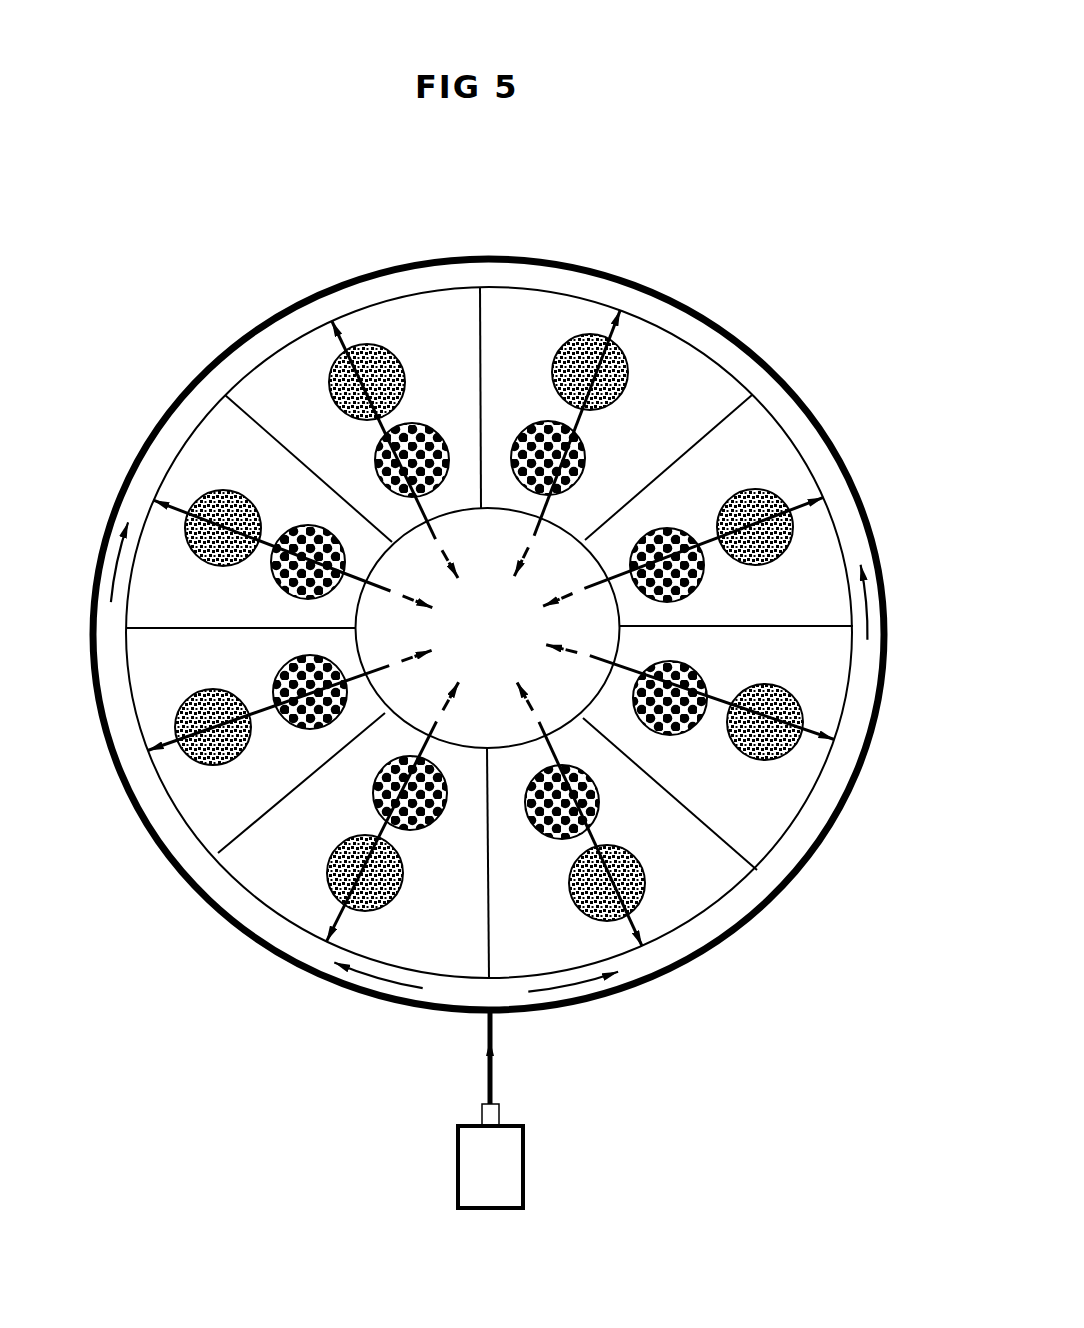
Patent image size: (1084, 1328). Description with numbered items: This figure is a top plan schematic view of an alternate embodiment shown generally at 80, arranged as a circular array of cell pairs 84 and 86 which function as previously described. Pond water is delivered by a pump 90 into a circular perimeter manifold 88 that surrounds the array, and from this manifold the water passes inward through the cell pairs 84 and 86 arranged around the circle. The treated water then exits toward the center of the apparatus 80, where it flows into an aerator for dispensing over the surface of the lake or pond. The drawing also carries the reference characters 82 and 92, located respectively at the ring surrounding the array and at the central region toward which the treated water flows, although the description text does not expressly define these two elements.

The alternate embodiment 80 is at (690, 220).
The rotatable platform 82 is at (705, 353).
The cell 84 is at (625, 347).
The cell 86 is at (530, 413).
The circular perimeter manifold 88 is at (617, 997).
The pump 90 is at (523, 1163).
The central hub 92 is at (508, 643).